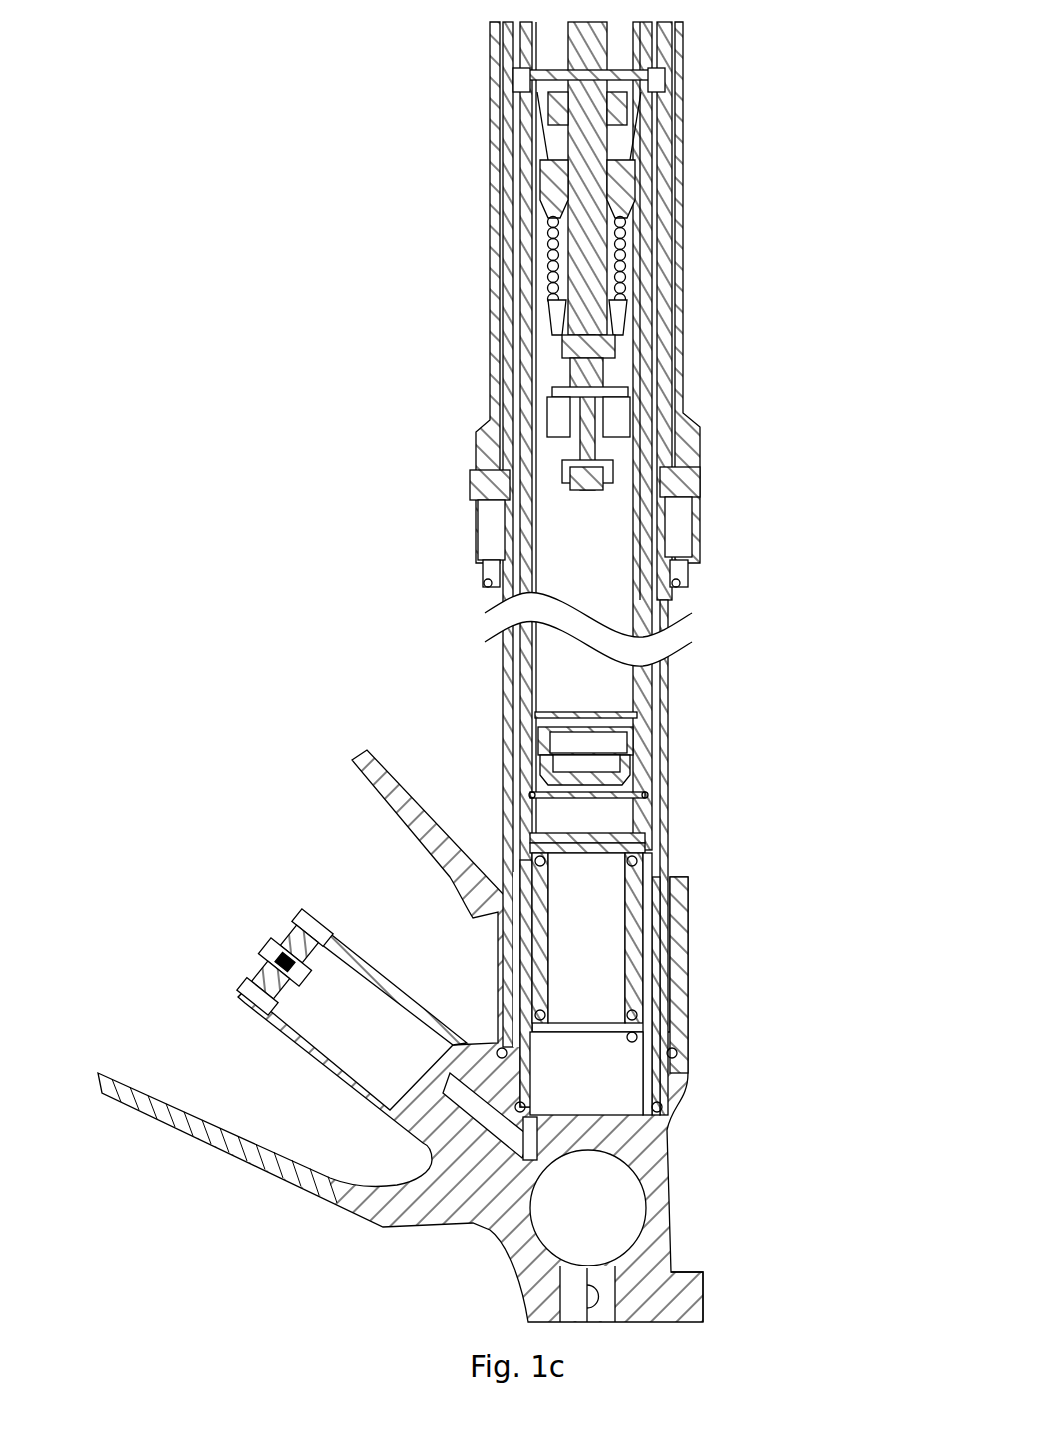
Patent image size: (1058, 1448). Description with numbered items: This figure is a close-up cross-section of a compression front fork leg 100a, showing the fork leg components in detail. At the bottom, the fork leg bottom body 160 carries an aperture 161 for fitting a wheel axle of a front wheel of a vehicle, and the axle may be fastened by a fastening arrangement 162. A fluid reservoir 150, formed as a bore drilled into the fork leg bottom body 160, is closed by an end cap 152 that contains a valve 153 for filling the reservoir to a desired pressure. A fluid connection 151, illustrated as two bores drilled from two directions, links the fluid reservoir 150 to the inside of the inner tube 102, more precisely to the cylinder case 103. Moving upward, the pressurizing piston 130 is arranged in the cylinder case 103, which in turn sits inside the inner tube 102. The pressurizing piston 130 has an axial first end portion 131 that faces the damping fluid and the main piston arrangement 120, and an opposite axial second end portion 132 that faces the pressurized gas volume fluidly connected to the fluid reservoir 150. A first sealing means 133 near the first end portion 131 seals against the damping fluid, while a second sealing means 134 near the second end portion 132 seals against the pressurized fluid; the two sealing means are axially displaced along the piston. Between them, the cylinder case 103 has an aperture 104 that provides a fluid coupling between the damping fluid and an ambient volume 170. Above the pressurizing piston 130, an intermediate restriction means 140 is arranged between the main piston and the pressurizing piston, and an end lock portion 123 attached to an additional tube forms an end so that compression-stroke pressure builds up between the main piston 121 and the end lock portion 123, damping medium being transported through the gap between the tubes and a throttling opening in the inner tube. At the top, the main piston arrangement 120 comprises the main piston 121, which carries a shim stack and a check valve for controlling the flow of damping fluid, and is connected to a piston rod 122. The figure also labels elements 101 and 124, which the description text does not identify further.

The front fork leg 100a is at (247, 213).
The outer housing 101 is at (678, 380).
The inner tube 102 is at (507, 653).
The cylinder case 103 is at (528, 742).
The aperture 104 is at (650, 953).
The main piston arrangement 120 is at (630, 327).
The main piston 121 is at (560, 397).
The piston rod 122 is at (597, 108).
The end lock portion 123 is at (648, 750).
The intermediate tube 124 is at (525, 290).
The pressurizing piston 130 is at (630, 892).
The axial first end portion 131 is at (613, 830).
The axial second end portion 132 is at (632, 1040).
The first sealing means 133 is at (530, 868).
The second sealing means 134 is at (633, 1017).
The intermediate restriction means 140 is at (617, 800).
The fluid reservoir 150 is at (303, 954).
The fluid connection 151 is at (517, 1142).
The end cap 152 is at (257, 983).
The valve 153 is at (307, 977).
The fork leg bottom body 160 is at (660, 1197).
The aperture 161 is at (598, 1232).
The fastening arrangement 162 is at (693, 1305).
The ambient volume 170 is at (653, 685).